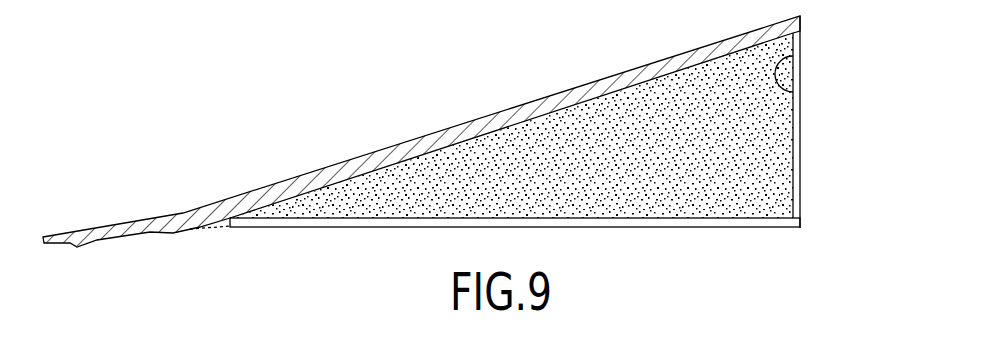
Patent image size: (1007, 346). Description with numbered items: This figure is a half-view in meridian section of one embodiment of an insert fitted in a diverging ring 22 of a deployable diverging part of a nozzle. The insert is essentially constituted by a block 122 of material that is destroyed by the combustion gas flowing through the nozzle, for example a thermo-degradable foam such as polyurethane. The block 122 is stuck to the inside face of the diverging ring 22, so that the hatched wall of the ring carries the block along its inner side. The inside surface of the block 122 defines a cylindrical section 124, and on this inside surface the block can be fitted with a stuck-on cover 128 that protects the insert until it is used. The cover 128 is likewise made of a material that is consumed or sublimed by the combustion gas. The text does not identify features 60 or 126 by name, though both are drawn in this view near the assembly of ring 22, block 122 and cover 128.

The diverging ring 22 is at (525, 103).
The trailing edge assembly 60 is at (771, 253).
The block 122 is at (772, 175).
The cylindrical section 124 is at (693, 291).
The pocket 126 is at (797, 92).
The cover 128 is at (369, 223).